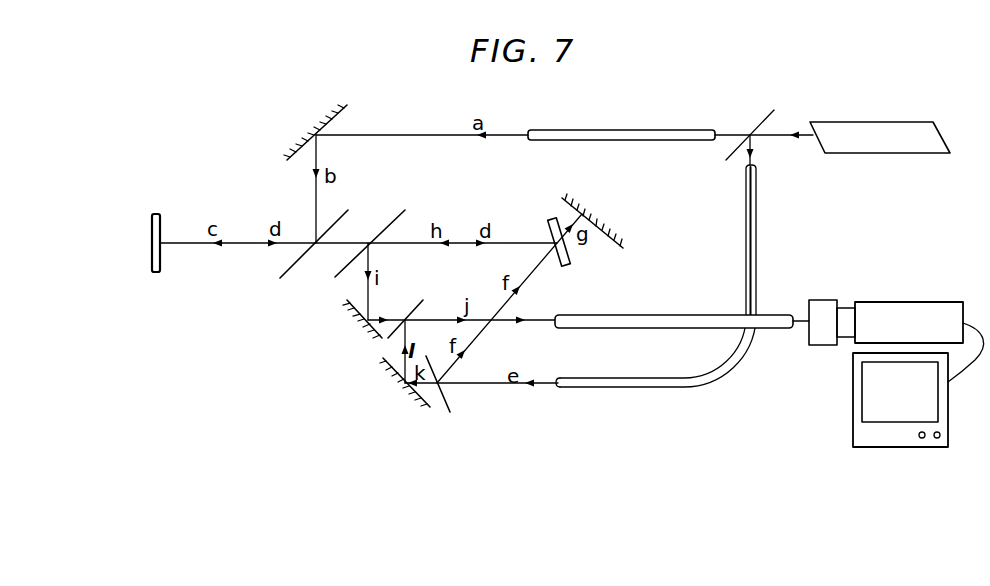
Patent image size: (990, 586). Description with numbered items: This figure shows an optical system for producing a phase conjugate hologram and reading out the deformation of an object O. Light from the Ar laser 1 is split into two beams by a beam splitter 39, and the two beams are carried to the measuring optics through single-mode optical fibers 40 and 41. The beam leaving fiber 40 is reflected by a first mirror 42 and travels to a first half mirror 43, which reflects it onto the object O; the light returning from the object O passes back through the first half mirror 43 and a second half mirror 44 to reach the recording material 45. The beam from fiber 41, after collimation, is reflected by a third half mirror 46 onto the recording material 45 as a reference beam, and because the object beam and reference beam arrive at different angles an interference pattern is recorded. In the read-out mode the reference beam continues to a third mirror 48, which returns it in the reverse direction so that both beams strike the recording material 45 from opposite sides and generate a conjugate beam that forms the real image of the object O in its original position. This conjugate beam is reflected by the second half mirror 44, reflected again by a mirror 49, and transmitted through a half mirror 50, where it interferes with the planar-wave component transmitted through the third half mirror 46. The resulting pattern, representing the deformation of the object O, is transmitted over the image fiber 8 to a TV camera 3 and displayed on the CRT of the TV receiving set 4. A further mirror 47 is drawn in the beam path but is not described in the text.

The object O is at (162, 215).
The Ar laser 1 is at (892, 127).
The TV camera 3 is at (897, 310).
The TV receiving set 4 is at (935, 405).
The image fiber 8 is at (700, 315).
The beam splitter 39 is at (761, 123).
The single-mode optical fiber 40 is at (645, 130).
The single-mode optical fiber 41 is at (753, 258).
The first mirror 42 is at (342, 118).
The first half mirror 43 is at (297, 263).
The second half mirror 44 is at (396, 209).
The recording material 45 is at (564, 265).
The third half mirror 46 is at (442, 395).
The mirror 47 is at (410, 390).
The third mirror 48 is at (600, 225).
The mirror 49 is at (360, 308).
The half mirror 50 is at (420, 304).